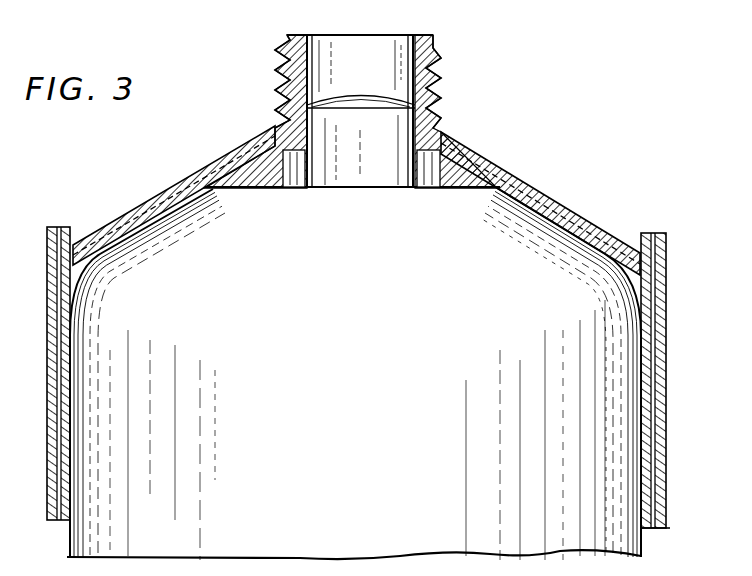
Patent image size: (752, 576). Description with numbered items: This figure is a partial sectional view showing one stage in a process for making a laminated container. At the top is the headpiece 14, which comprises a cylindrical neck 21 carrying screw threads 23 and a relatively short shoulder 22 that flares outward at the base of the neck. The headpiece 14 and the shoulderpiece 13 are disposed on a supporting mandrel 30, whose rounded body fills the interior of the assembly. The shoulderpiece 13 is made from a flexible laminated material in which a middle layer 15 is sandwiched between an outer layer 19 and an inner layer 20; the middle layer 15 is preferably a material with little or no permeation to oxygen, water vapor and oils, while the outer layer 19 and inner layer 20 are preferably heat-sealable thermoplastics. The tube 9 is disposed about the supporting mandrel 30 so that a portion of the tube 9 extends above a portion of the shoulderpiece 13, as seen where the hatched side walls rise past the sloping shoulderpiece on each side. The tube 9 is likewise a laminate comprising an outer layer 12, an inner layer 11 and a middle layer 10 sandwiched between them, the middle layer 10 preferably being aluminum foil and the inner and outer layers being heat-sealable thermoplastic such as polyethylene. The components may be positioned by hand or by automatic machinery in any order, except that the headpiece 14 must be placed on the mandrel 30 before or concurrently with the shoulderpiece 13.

The headpiece 14 is at (292, 35).
The cylindrical neck 21 is at (436, 58).
The screw threads 23 is at (440, 86).
The shoulderpiece 13 is at (168, 186).
The middle layer 15 is at (120, 228).
The outer layer 19 is at (533, 196).
The shoulder 22 is at (458, 180).
The inner layer 20 is at (518, 200).
The supporting mandrel 30 is at (612, 302).
The outer layer 12 is at (663, 364).
The middle layer 10 is at (655, 401).
The inner layer 11 is at (645, 432).
The tube 9 is at (668, 528).